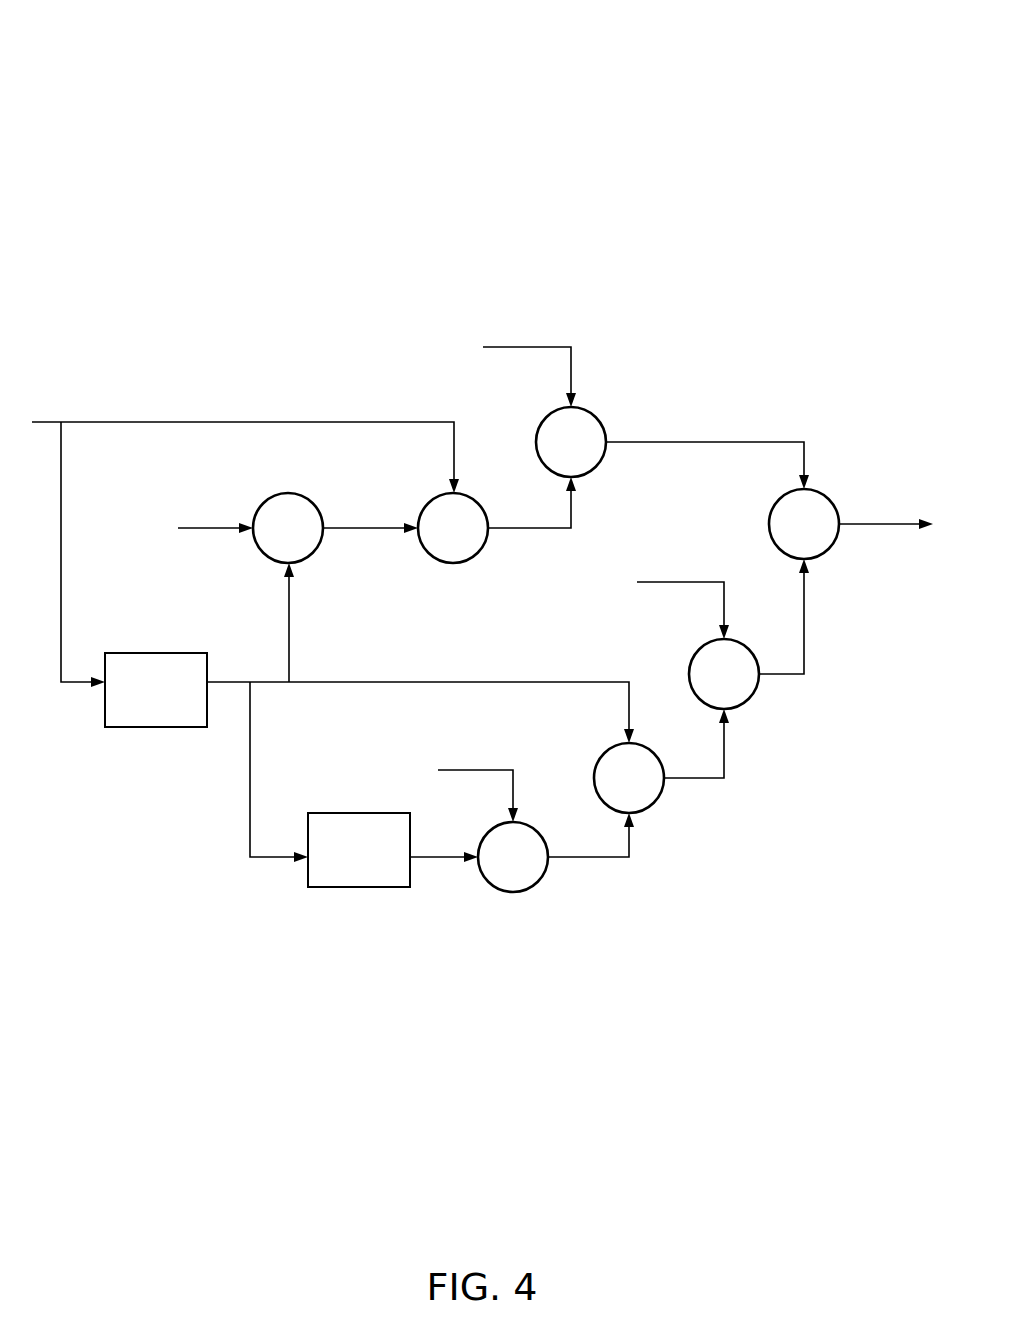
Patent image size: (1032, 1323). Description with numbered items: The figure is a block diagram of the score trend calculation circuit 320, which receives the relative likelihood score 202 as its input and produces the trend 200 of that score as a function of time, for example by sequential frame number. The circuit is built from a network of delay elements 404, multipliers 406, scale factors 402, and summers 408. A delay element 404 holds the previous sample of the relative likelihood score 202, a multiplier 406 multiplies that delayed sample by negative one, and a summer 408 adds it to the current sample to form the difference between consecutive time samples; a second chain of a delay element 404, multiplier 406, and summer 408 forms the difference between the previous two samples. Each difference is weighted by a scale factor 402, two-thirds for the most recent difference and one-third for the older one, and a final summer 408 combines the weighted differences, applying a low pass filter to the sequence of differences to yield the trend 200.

The score trend calculation circuit 320 is at (474, 498).
The relative likelihood score 202 is at (237, 491).
The scale factor 402 is at (550, 294).
The trend 200 is at (886, 492).
The delay element 404 is at (148, 740).
The multiplier 406 is at (497, 902).
The summer 408 is at (672, 815).